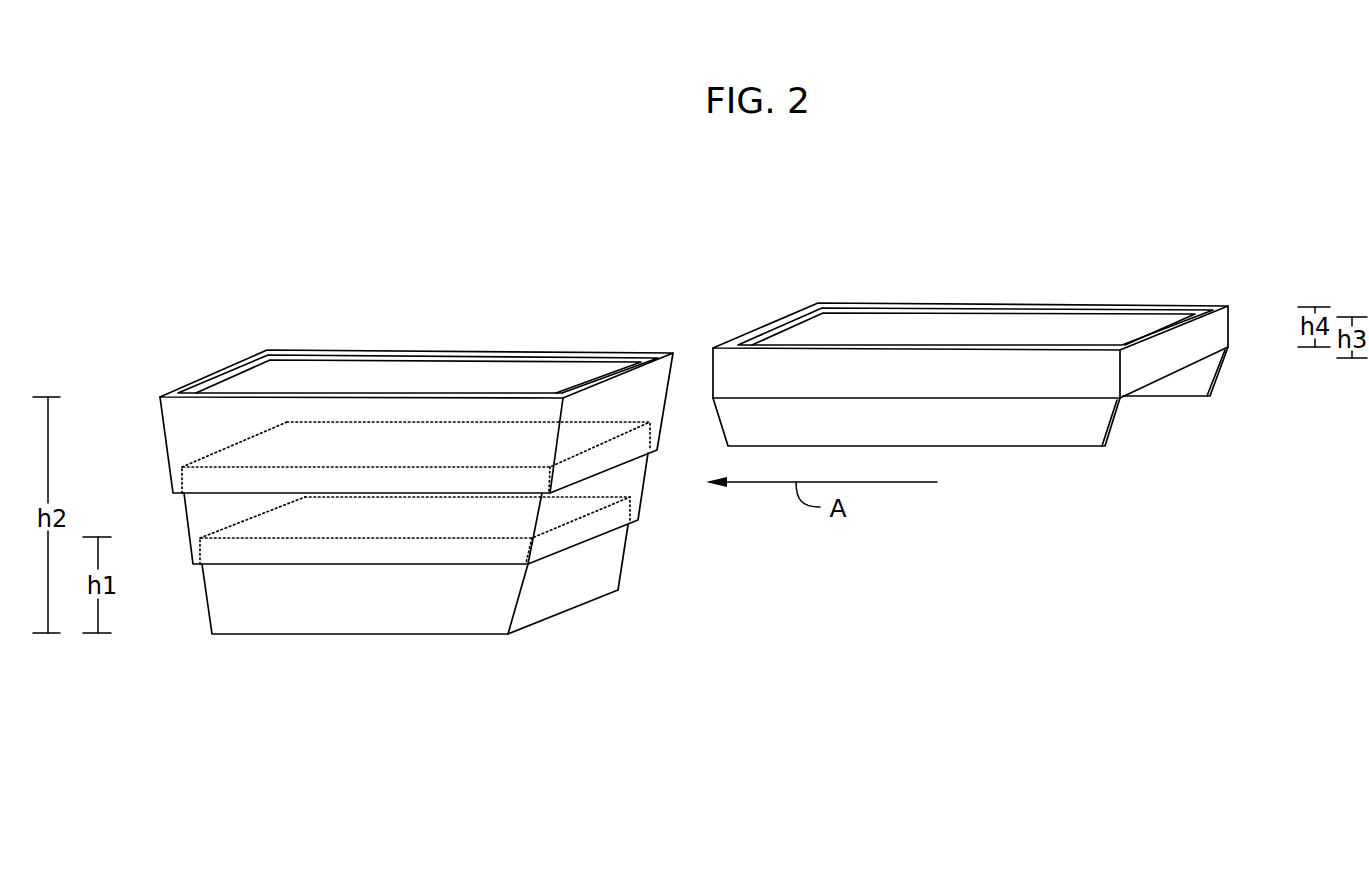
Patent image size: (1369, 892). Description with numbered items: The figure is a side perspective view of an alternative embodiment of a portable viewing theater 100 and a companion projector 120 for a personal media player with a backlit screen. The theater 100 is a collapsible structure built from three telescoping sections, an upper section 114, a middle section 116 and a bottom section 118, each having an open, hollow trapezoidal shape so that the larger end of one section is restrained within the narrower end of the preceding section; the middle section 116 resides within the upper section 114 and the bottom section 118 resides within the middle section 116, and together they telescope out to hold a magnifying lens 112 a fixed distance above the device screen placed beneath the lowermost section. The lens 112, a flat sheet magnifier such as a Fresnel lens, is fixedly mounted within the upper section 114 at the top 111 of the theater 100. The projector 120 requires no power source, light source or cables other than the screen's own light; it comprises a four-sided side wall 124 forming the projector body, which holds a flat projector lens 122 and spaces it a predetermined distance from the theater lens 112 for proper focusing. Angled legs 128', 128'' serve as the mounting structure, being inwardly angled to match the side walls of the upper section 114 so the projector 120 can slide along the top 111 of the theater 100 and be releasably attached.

The theater 100 is at (391, 445).
The top 111 is at (431, 351).
The magnifying lens 112 is at (287, 382).
The upper section 114 is at (166, 443).
The middle section 116 is at (188, 523).
The bottom section 118 is at (209, 605).
The projector 120 is at (1022, 346).
The projector lens 122 is at (895, 333).
The side wall 124 is at (1218, 327).
The angled leg 128' is at (968, 446).
The angled leg 128'' is at (1227, 403).